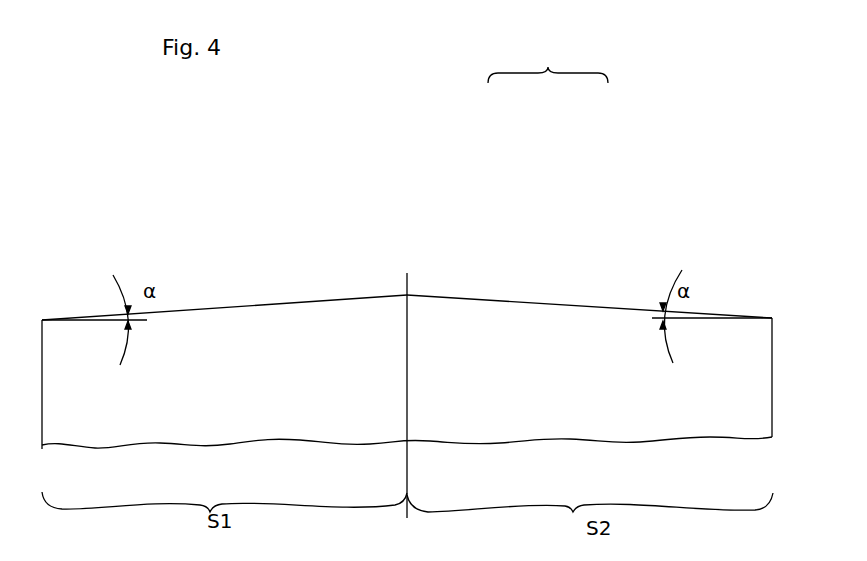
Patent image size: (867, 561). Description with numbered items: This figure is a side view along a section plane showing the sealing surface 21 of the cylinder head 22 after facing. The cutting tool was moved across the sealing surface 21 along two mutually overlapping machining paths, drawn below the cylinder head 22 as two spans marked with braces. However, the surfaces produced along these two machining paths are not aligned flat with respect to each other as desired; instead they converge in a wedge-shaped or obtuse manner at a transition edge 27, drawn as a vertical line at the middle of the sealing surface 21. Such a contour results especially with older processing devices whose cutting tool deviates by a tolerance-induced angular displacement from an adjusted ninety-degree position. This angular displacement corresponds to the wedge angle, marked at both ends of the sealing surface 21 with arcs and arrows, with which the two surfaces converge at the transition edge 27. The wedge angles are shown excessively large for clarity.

The sealing surface 21 is at (548, 63).
The cylinder head 22 is at (632, 384).
The transition edge 27 is at (408, 287).